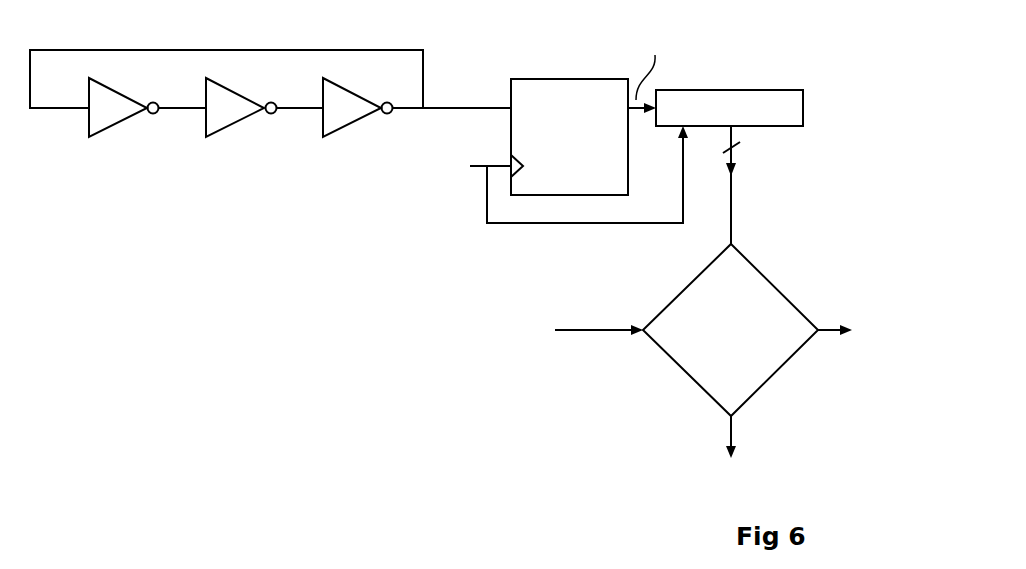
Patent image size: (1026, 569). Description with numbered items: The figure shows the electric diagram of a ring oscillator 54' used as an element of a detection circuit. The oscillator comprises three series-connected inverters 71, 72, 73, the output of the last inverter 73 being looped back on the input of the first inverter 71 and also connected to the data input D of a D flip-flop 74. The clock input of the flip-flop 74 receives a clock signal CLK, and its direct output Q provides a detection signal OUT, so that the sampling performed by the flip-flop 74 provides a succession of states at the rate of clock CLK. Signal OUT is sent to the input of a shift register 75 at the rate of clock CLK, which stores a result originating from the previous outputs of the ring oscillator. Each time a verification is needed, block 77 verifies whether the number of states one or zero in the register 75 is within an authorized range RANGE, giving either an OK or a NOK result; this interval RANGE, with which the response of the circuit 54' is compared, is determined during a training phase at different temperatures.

The ring oscillator 54' is at (465, 250).
The inverter 71 is at (113, 127).
The inverter 72 is at (230, 127).
The inverter 73 is at (347, 127).
The D flip-flop 74 is at (568, 79).
The shift register 75 is at (780, 92).
The verification block 77 is at (760, 270).